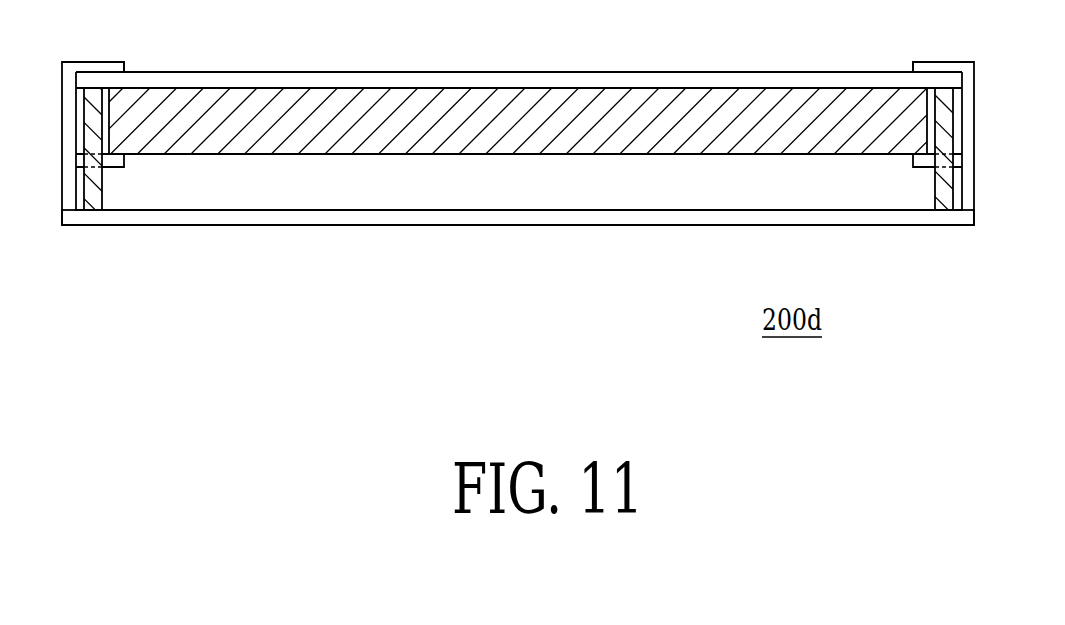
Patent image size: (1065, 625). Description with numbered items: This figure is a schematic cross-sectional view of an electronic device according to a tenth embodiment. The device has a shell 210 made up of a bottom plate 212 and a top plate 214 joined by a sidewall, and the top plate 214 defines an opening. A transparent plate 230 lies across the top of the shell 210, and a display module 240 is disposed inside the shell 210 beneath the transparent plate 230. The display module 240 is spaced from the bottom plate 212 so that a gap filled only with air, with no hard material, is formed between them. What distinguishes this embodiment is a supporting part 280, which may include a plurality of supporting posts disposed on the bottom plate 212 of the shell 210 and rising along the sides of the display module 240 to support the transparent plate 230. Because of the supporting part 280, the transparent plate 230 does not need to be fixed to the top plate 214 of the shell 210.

The shell 210 is at (967, 153).
The bottom plate 212 is at (320, 213).
The top plate 214 is at (95, 68).
The transparent plate 230 is at (263, 80).
The display module 240 is at (490, 115).
The supporting part 280 is at (952, 112).